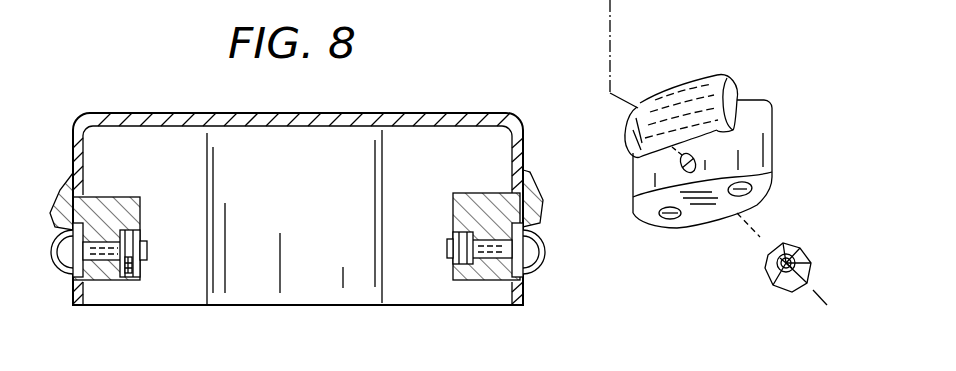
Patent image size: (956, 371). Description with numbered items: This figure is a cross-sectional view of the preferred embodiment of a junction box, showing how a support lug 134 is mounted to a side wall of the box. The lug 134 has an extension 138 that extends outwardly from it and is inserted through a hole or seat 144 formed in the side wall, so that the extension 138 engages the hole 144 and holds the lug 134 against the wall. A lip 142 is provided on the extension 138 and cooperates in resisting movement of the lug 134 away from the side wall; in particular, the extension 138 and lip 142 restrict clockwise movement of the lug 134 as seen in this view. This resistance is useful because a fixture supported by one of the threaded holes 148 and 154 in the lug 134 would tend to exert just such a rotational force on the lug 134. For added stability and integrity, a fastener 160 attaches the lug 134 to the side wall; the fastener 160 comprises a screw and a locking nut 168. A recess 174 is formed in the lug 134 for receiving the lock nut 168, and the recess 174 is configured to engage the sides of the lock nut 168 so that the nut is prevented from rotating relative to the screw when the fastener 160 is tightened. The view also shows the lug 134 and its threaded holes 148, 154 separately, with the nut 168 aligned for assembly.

The lug 134 is at (628, 168).
The extension 138 is at (58, 205).
The lip 142 is at (68, 170).
The hole 144 is at (88, 197).
The threaded hole 148 is at (670, 219).
The threaded hole 154 is at (755, 189).
The fastener 160 is at (150, 250).
The locking nut 168 is at (808, 260).
The recess 174 is at (124, 277).